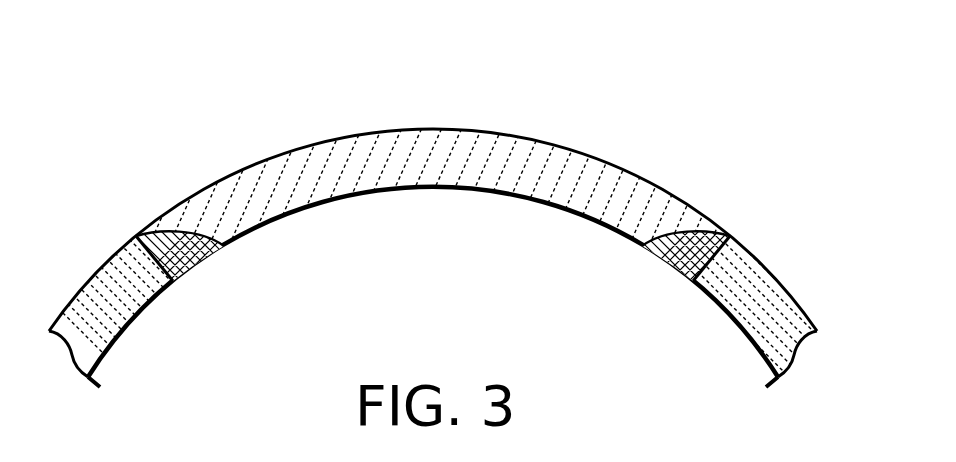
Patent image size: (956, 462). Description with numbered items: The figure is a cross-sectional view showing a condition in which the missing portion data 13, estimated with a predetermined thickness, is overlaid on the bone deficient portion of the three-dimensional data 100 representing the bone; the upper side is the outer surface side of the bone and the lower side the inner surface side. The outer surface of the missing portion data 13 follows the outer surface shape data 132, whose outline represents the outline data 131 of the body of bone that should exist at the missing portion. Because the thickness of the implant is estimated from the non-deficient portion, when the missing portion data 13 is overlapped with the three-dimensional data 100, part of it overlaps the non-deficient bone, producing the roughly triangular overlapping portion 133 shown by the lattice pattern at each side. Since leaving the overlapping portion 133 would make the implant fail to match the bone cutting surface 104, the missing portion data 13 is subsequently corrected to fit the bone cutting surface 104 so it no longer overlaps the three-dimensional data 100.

The deficient portion data 13 is at (497, 160).
The three-dimensional data 100 is at (88, 310).
The bone cutting surface 104 is at (201, 236).
The outline data 131 is at (136, 236).
The outer surface shape data 132 is at (372, 132).
The overlapping portion 133 is at (192, 257).